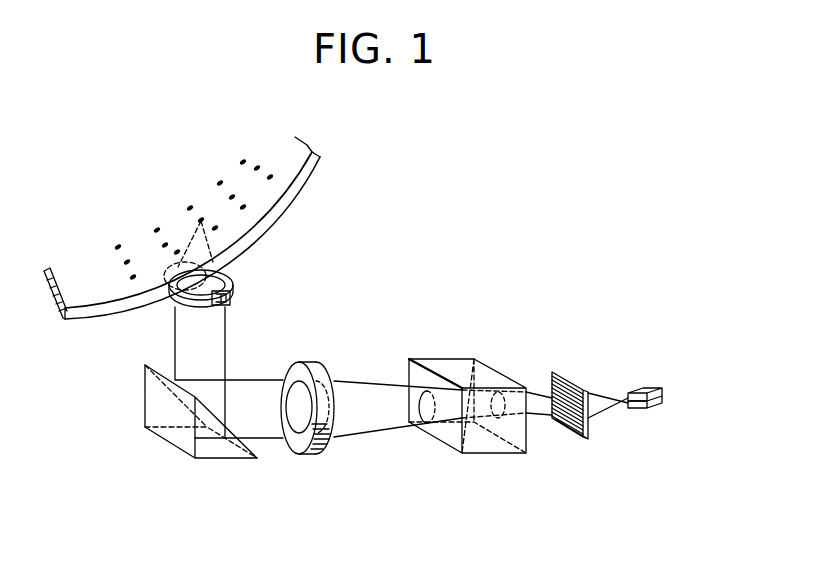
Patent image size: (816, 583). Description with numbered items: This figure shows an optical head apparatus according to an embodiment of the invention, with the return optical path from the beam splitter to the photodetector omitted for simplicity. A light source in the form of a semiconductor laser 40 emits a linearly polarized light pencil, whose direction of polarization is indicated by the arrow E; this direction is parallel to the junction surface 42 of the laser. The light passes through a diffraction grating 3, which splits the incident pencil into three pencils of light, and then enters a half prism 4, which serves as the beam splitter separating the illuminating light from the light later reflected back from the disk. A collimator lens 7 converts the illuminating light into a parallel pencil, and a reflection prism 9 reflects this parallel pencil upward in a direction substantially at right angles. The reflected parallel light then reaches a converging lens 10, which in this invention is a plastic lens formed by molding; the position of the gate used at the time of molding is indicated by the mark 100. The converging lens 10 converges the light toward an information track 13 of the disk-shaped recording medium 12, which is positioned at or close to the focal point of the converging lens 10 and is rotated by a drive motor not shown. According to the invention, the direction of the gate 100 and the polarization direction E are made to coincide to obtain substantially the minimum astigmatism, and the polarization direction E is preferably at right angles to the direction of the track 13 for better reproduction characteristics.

The recording medium 12 is at (297, 188).
The information track 13 is at (237, 147).
The converging lens 10 is at (233, 282).
The gate 100 is at (231, 300).
The reflection prism 9 is at (222, 445).
The collimator lens 7 is at (325, 362).
The half prism 4 is at (455, 370).
The diffraction grating 3 is at (570, 380).
The direction of polarization E is at (620, 408).
The semiconductor laser 40 is at (648, 390).
The junction surface 42 is at (647, 410).